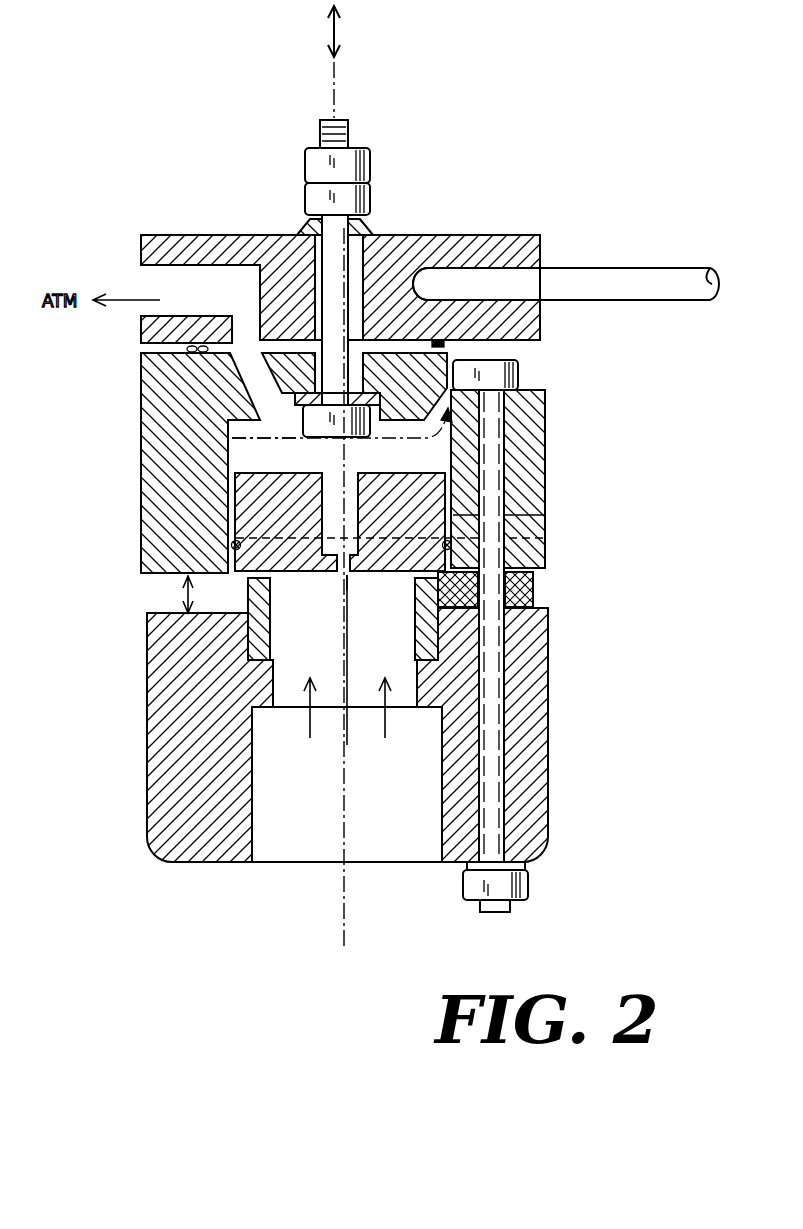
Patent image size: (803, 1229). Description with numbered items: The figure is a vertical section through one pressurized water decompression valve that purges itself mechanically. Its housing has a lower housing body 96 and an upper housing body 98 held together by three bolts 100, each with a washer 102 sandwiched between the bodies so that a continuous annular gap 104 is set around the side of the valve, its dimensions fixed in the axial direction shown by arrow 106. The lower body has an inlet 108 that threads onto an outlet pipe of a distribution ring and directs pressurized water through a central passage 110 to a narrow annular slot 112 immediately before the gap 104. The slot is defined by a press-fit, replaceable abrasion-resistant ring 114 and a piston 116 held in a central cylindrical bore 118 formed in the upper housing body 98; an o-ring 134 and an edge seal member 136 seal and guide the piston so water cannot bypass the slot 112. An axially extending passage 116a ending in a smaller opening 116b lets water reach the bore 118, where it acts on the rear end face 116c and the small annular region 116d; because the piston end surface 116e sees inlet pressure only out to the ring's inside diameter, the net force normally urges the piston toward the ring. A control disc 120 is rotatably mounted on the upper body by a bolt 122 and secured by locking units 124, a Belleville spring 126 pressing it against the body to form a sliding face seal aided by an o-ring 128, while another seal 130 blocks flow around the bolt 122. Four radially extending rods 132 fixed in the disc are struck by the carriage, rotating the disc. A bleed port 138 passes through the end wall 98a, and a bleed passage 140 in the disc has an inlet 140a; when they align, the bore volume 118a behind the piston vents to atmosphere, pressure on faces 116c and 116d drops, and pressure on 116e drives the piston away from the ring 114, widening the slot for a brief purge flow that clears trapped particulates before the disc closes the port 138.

The lower housing body 96 is at (525, 700).
The upper housing body 98 is at (525, 500).
The end wall 98a is at (385, 234).
The bolts 100 is at (500, 430).
The washer 102 is at (533, 592).
The annular gap 104 is at (160, 598).
The arrow 106 is at (348, 42).
The inlet 108 is at (311, 830).
The central passage 110 is at (273, 683).
The annular slot 112 is at (272, 590).
The ring 114 is at (270, 640).
The piston 116 is at (240, 487).
The axially extending passage 116a is at (233, 545).
The smaller opening 116b is at (347, 618).
The rear end face 116c is at (268, 475).
The annular region 116d is at (358, 480).
The piston end surface 116e is at (348, 585).
The central cylindrical bore 118 is at (545, 517).
The bore volume 118a is at (252, 452).
The control disc 120 is at (498, 234).
The bolt 122 is at (322, 133).
The locking units 124 is at (372, 200).
The Belleville spring 126 is at (305, 230).
The o-ring 128 is at (445, 345).
The seal 130 is at (267, 380).
The rods 132 is at (620, 267).
The o-ring 134 is at (452, 546).
The edge seal member 136 is at (245, 482).
The bleed port 138 is at (267, 397).
The bleed passage 140 is at (140, 265).
The inlet 140a is at (247, 330).